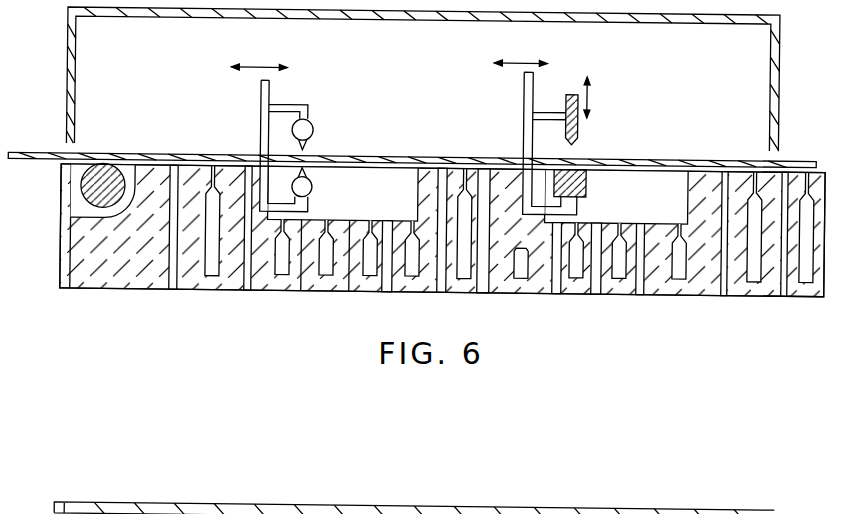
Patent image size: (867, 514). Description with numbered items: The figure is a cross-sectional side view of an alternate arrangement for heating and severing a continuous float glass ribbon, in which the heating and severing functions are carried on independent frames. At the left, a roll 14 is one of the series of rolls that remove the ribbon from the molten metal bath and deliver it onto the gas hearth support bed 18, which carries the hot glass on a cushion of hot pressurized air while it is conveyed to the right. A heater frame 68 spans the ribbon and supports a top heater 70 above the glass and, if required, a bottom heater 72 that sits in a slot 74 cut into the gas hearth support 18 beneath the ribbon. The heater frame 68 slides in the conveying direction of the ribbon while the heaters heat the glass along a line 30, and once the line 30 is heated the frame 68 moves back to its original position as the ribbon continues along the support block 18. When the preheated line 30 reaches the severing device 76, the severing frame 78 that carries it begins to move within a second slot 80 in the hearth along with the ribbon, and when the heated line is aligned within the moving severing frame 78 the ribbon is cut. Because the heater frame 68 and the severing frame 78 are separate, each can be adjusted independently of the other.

The rolls 14 is at (78, 204).
The gas hearth support bed 18 is at (421, 245).
The line 30 is at (312, 148).
The heater frame 68 is at (262, 119).
The top heater 70 is at (312, 120).
The bottom heater 72 is at (314, 184).
The slot 74 is at (359, 217).
The severing device 76 is at (567, 89).
The severing frame 78 is at (525, 86).
The slot 80 is at (632, 217).